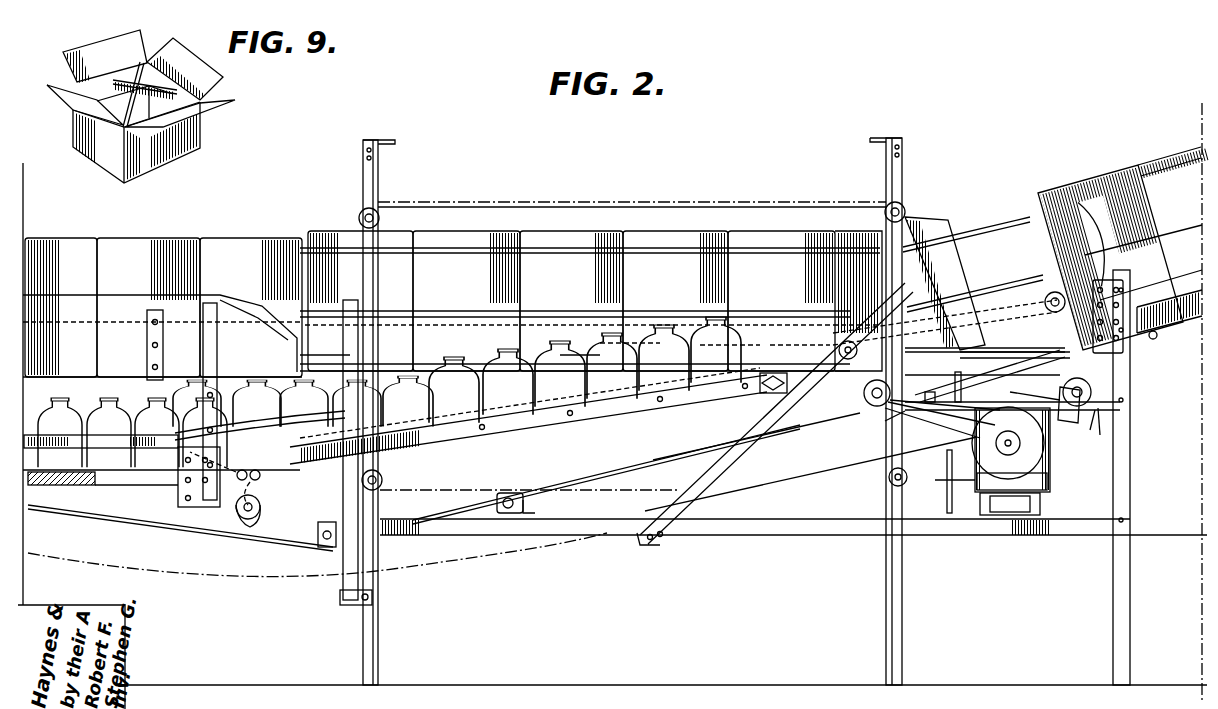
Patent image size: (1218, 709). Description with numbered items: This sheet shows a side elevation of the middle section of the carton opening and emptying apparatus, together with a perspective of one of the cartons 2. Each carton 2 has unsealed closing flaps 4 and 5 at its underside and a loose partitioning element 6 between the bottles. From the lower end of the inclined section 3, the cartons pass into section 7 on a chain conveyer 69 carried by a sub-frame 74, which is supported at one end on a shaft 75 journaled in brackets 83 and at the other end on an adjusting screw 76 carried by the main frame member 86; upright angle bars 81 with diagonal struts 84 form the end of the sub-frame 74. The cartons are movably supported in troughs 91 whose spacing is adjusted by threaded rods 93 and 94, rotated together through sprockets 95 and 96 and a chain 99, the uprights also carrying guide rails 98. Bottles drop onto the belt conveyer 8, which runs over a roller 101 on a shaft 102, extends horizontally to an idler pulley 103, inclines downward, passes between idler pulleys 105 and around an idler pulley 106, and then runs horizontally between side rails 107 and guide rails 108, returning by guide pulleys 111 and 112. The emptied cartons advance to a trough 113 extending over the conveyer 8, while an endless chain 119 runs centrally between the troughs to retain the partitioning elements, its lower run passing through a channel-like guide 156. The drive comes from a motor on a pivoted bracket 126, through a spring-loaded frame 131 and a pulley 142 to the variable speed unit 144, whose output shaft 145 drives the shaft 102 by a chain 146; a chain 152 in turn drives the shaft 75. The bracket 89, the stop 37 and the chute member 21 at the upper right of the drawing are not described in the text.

In FIG. 9, the carton 2 is at (190, 152).
In FIG. 2, the carton 2 is at (82, 237).
In FIG. 2, the inclined section 3 is at (1165, 345).
In FIG. 9, the closing flap 4 is at (72, 108).
In FIG. 2, the closing flap 4 is at (632, 343).
In FIG. 9, the closing flap 5 is at (88, 48).
In FIG. 2, the closing flap 5 is at (100, 350).
In FIG. 9, the partitioning element 6 is at (145, 60).
In FIG. 2, the section 7 is at (582, 418).
In FIG. 2, the conveyer 8 is at (560, 478).
In FIG. 2, the case chute 21 is at (1190, 170).
In FIG. 2, the stop 37 is at (1153, 340).
In FIG. 2, the conveyer 69 is at (992, 292).
In FIG. 2, the sub-frame 74 is at (1045, 306).
In FIG. 2, the shaft 75 is at (1092, 392).
In FIG. 2, the adjusting screw 76 is at (936, 387).
In FIG. 2, the upright angle bar 81 is at (1052, 393).
In FIG. 2, the bracket 83 is at (1093, 427).
In FIG. 2, the strut 84 is at (1028, 382).
In FIG. 2, the main frame member 86 is at (942, 418).
In FIG. 2, the mounting bracket 89 is at (1100, 354).
In FIG. 2, the trough 91 is at (352, 354).
In FIG. 2, the threaded rod 93 is at (360, 212).
In FIG. 2, the threaded rod 94 is at (383, 476).
In FIG. 2, the sprocket 95 is at (380, 214).
In FIG. 2, the sprocket 96 is at (383, 482).
In FIG. 2, the guide rail 98 is at (548, 310).
In FIG. 2, the chain 99 is at (532, 203).
In FIG. 2, the roller 101 is at (866, 406).
In FIG. 2, the shaft 102 is at (864, 394).
In FIG. 2, the idler pulley 103 is at (775, 395).
In FIG. 2, the idler pulley 105 is at (262, 489).
In FIG. 2, the idler pulley 106 is at (258, 514).
In FIG. 2, the side rail 107 is at (690, 386).
In FIG. 2, the guide rail 108 is at (88, 432).
In FIG. 2, the guide pulley 111 is at (318, 545).
In FIG. 2, the guide pulley 112 is at (505, 514).
In FIG. 2, the trough 113 is at (112, 305).
In FIG. 2, the endless chain 119 is at (130, 564).
In FIG. 2, the bracket 126 is at (1010, 510).
In FIG. 2, the frame 131 is at (1052, 458).
In FIG. 2, the pulley 142 is at (946, 506).
In FIG. 2, the variable speed unit 144 is at (1098, 485).
In FIG. 2, the output shaft 145 is at (1008, 441).
In FIG. 2, the chain 146 is at (888, 425).
In FIG. 2, the chain 152 is at (978, 352).
In FIG. 2, the channel-like guide 156 is at (850, 462).